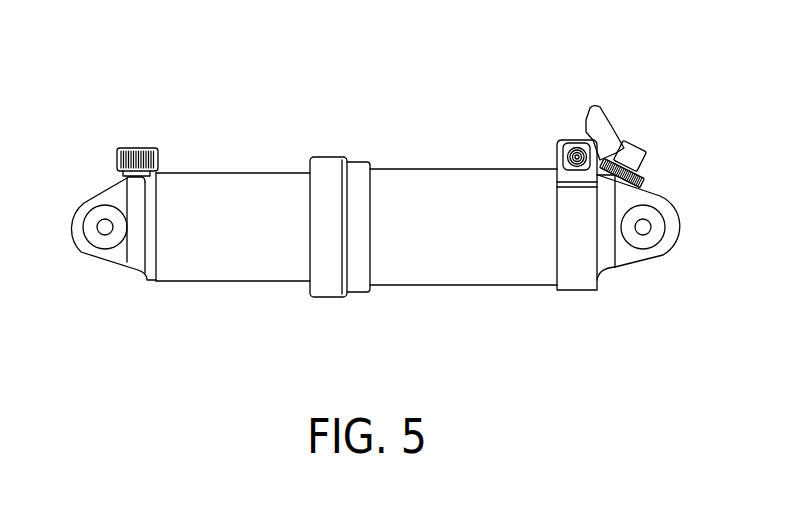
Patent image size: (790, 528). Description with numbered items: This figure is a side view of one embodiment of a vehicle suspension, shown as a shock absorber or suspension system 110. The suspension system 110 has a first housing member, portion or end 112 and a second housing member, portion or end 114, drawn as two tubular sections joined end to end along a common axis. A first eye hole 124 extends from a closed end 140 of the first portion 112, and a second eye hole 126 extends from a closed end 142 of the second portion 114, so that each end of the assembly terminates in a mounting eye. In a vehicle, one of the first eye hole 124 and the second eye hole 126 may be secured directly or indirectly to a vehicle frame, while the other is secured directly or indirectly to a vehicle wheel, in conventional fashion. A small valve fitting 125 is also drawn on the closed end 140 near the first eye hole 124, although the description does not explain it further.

The suspension system 110 is at (378, 93).
The first housing member 112 is at (487, 270).
The second housing member 114 is at (233, 257).
The first eye hole 124 is at (650, 238).
The air valve 125 is at (572, 148).
The second eye hole 126 is at (100, 242).
The closed end of the first portion 140 is at (603, 297).
The closed end of the second portion 142 is at (135, 292).